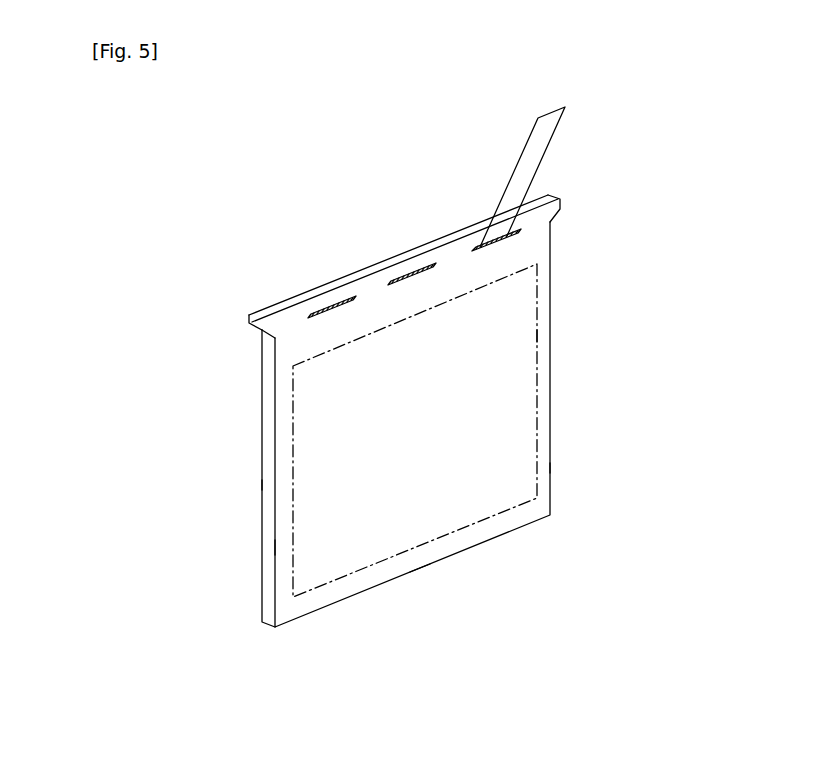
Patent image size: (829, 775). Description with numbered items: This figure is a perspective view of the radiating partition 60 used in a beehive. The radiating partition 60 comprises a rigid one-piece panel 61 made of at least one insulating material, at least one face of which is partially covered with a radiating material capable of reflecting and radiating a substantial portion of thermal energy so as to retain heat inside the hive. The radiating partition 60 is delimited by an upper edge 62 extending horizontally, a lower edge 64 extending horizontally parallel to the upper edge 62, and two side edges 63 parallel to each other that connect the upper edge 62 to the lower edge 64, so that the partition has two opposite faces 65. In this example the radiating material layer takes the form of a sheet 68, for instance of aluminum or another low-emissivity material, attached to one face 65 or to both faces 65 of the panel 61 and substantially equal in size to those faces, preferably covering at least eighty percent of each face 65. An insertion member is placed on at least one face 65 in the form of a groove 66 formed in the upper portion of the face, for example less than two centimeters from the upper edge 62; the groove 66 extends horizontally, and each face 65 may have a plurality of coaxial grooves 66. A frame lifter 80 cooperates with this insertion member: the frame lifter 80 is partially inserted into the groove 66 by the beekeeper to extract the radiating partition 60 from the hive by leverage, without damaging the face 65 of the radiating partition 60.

The radiating partition 60 is at (207, 252).
The panel 61 is at (284, 432).
The upper edge 62 is at (437, 238).
The side edges 63 is at (265, 485).
The lower edge 64 is at (420, 567).
The face 65 is at (282, 547).
The groove 66 is at (325, 306).
The sheet 68 is at (537, 338).
The frame lifter 80 is at (532, 160).